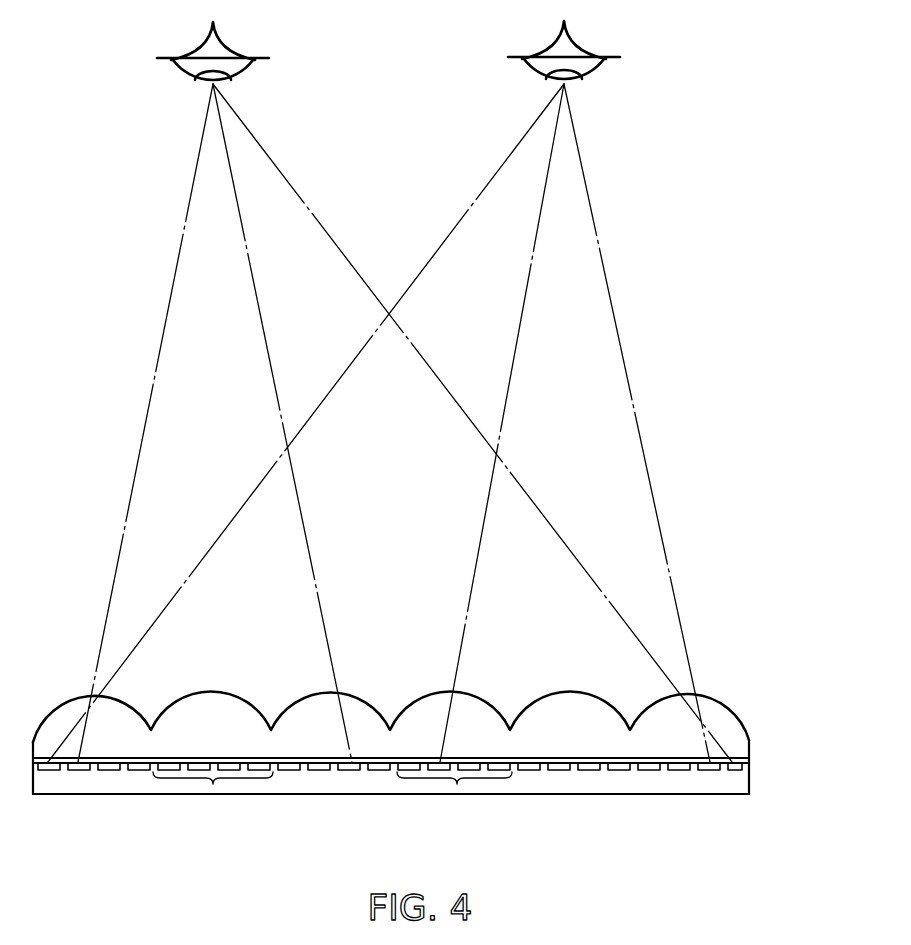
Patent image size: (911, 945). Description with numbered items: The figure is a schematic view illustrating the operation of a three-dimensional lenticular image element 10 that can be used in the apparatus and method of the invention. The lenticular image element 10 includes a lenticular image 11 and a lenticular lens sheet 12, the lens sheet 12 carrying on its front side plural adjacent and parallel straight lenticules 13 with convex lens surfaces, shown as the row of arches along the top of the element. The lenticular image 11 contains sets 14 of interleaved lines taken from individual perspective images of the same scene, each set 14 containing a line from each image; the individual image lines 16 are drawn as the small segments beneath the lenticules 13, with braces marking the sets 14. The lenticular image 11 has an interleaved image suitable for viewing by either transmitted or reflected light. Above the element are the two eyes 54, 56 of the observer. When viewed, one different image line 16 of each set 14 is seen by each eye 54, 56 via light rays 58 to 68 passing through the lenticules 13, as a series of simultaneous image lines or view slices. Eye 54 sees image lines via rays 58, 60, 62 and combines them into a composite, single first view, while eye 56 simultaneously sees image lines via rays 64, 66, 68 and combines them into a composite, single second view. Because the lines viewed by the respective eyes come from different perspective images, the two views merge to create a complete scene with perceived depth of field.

The lenticular image element 10 is at (738, 686).
The lenticular image 11 is at (750, 782).
The lenticular lens sheet 12 is at (762, 735).
The lenticules 13 is at (305, 692).
The sets of interleaved lines 14 is at (478, 820).
The image line 16 is at (257, 762).
The eye 54 is at (183, 74).
The eye 56 is at (597, 72).
The light ray 58 is at (168, 312).
The light ray 60 is at (270, 363).
The light ray 62 is at (333, 240).
The light ray 64 is at (452, 228).
The light ray 66 is at (515, 342).
The light ray 68 is at (622, 358).